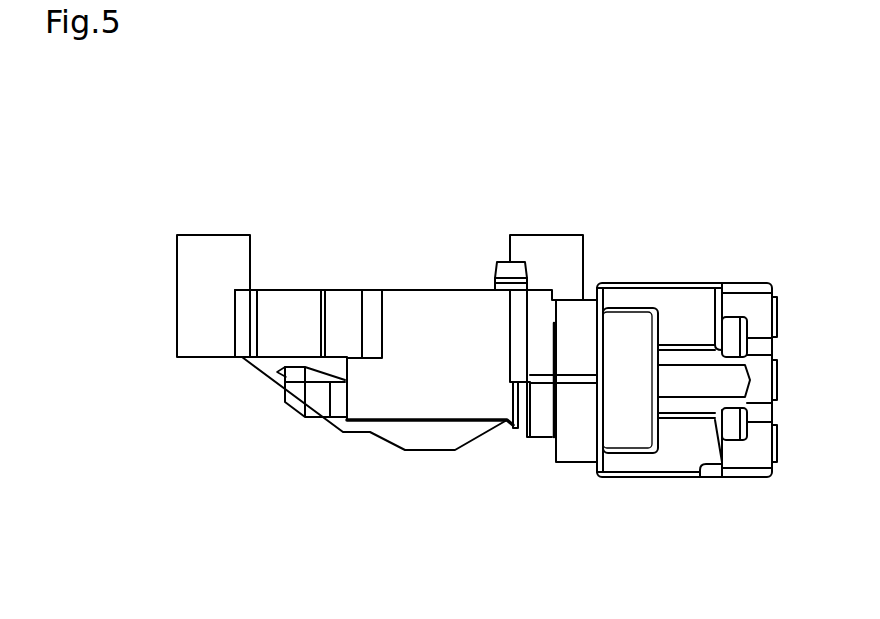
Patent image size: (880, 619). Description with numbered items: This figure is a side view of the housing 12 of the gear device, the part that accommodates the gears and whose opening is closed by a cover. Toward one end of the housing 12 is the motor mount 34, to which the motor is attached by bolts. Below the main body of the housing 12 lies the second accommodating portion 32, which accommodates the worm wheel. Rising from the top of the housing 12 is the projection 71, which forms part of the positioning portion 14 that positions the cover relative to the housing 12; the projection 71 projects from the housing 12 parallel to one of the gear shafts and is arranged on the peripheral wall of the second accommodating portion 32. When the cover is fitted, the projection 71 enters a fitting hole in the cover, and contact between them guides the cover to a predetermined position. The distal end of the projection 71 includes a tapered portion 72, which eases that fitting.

The housing 12 is at (605, 176).
The projection 71 is at (479, 246).
The positioning portion 14 is at (497, 262).
The tapered portion 72 is at (494, 270).
The motor mount 34 is at (694, 282).
The second accommodating portion 32 is at (357, 460).